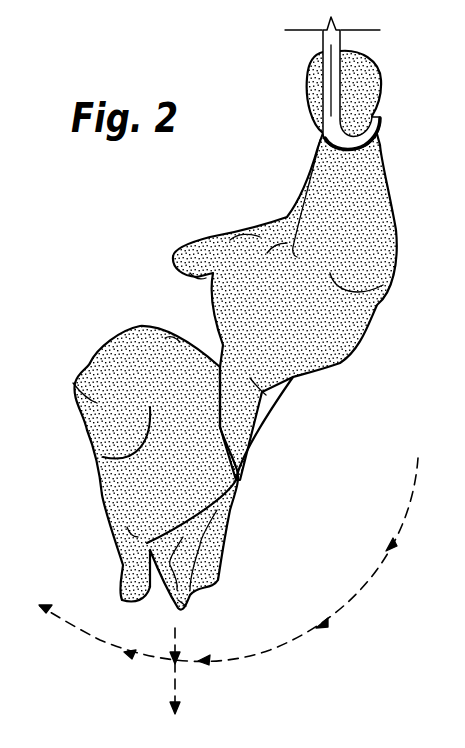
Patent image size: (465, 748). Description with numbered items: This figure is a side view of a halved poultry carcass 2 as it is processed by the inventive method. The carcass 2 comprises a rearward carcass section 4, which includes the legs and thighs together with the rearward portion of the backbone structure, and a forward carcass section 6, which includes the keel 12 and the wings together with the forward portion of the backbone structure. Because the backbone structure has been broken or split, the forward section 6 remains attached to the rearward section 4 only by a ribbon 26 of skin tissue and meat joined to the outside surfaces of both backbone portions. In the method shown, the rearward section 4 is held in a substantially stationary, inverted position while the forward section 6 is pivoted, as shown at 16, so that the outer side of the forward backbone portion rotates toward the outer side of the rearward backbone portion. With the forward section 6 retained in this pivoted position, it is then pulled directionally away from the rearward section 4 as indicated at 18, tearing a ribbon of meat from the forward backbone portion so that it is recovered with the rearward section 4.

The poultry carcass 2 is at (175, 235).
The rearward carcass section 4 is at (323, 322).
The forward carcass section 6 is at (127, 373).
The ribbon of skin tissue and meat 26 is at (262, 390).
The keel 12 is at (185, 606).
The pivoting direction 16 is at (138, 661).
The pulling direction 18 is at (180, 680).